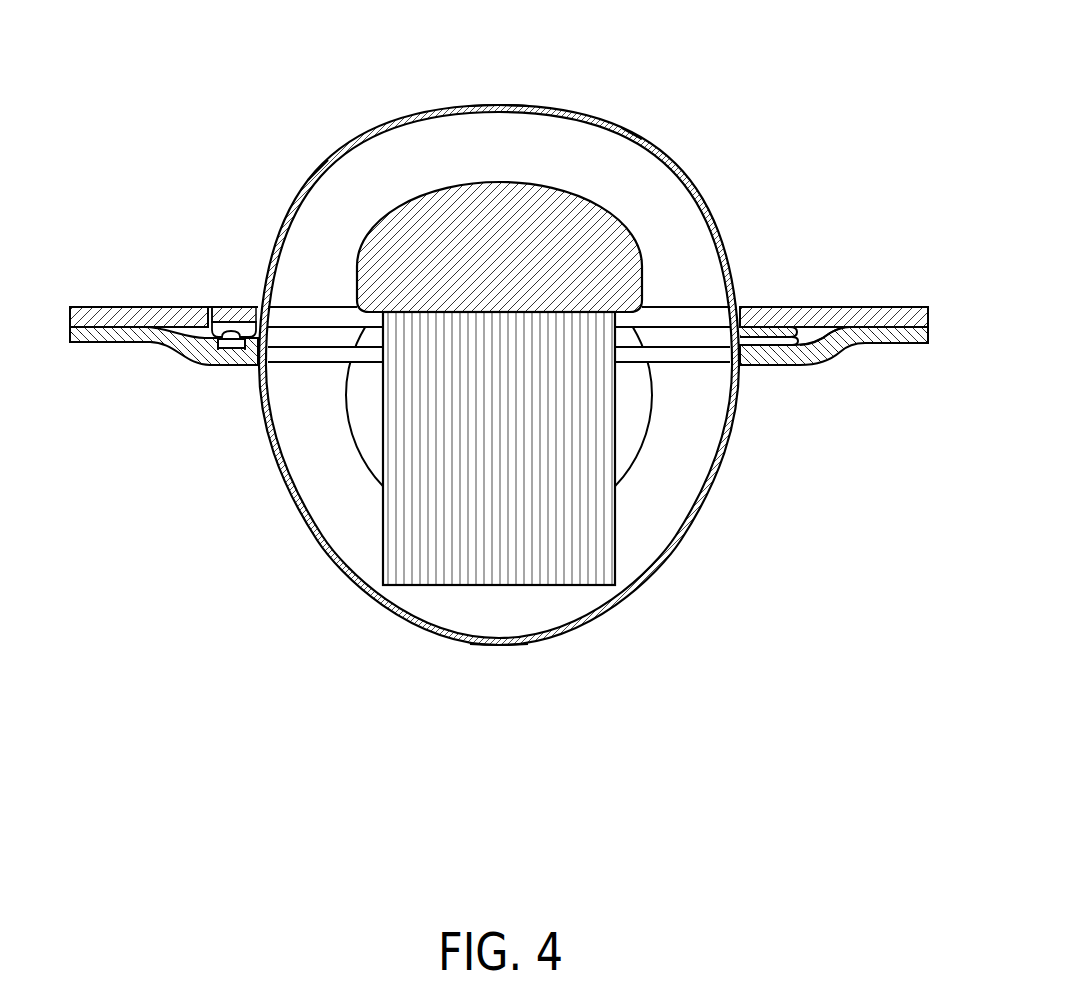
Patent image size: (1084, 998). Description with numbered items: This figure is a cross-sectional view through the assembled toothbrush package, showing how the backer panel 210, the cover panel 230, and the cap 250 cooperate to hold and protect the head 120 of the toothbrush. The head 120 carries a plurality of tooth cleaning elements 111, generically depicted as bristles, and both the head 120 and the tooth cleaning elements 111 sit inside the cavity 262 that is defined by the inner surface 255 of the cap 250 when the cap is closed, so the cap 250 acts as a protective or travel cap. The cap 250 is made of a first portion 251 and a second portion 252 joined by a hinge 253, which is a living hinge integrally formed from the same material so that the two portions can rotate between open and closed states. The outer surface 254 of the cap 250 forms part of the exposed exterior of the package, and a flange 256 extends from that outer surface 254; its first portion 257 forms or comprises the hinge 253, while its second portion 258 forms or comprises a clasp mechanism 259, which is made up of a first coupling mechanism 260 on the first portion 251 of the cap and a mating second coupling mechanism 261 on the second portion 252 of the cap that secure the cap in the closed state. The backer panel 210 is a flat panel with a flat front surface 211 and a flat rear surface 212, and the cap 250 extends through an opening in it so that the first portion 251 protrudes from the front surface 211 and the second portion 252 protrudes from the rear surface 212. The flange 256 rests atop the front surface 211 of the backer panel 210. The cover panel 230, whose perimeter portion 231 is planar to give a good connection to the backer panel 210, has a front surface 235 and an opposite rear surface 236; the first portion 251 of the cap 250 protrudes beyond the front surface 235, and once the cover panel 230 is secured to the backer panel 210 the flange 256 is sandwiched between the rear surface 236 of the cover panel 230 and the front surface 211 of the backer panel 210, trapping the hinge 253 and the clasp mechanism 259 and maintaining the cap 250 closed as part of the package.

The tooth cleaning elements 111 is at (585, 550).
The head 120 is at (486, 218).
The backer panel 210 is at (835, 318).
The front surface 211 is at (815, 346).
The rear surface 212 is at (889, 307).
The cover panel 230 is at (78, 340).
The perimeter portion 231 is at (902, 345).
The front surface 235 is at (98, 345).
The rear surface 236 is at (175, 307).
The cap 250 is at (706, 195).
The first portion 251 is at (498, 648).
The second portion 252 is at (543, 106).
The hinge 253 is at (808, 348).
The outer surface 254 is at (317, 170).
The inner surface 255 is at (601, 128).
The flange 256 is at (776, 326).
The first portion 257 is at (760, 352).
The second portion 258 is at (196, 306).
The clasp mechanism 259 is at (233, 352).
The first coupling mechanism 260 is at (222, 322).
The second coupling mechanism 261 is at (245, 320).
The cavity 262 is at (324, 503).